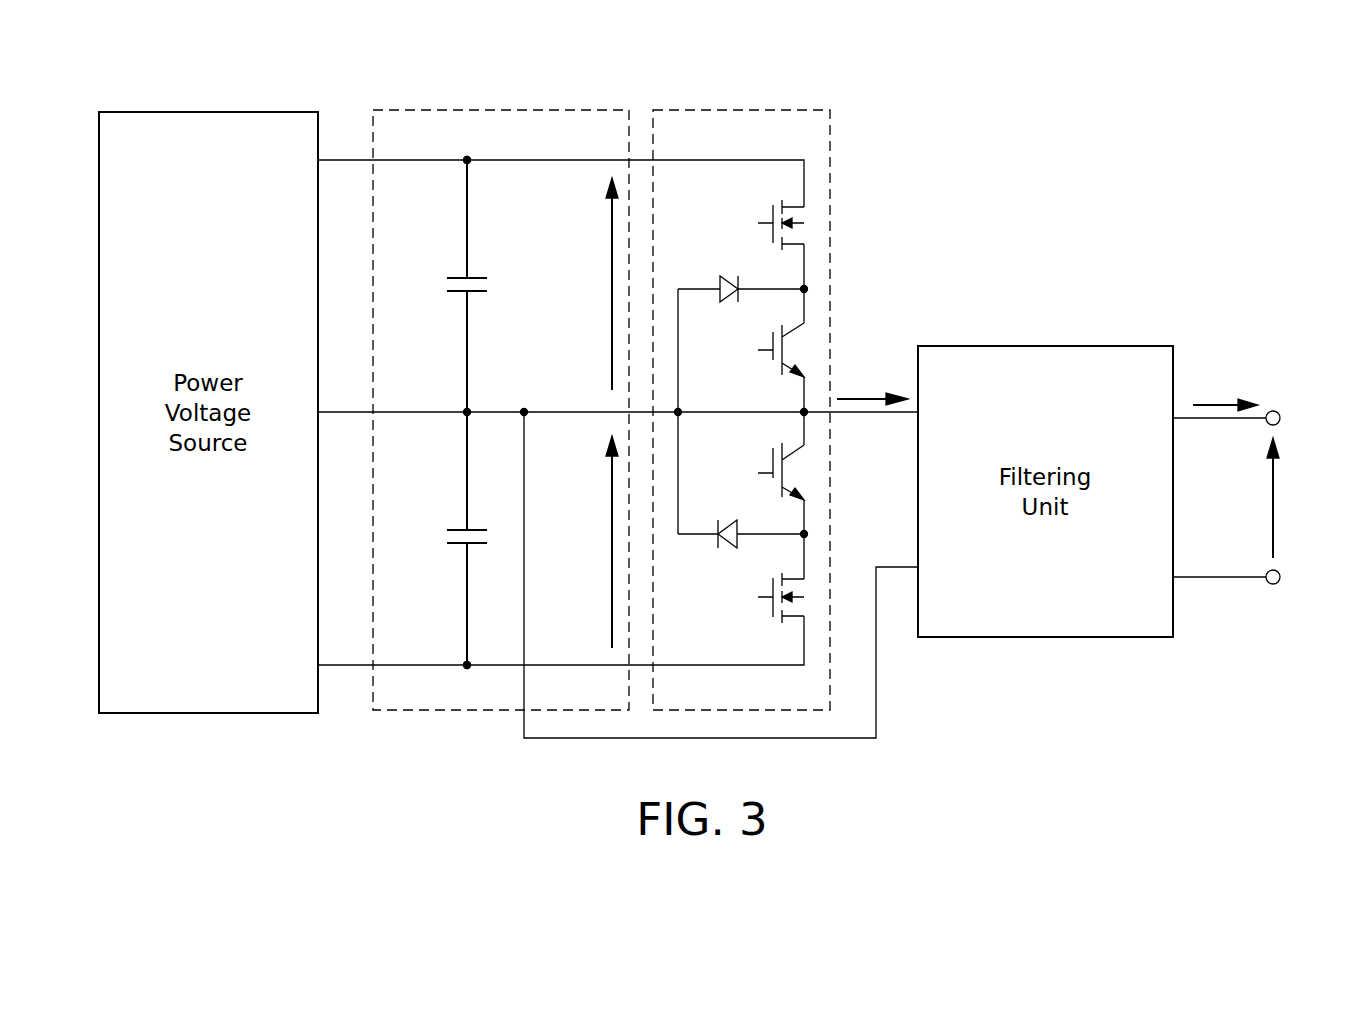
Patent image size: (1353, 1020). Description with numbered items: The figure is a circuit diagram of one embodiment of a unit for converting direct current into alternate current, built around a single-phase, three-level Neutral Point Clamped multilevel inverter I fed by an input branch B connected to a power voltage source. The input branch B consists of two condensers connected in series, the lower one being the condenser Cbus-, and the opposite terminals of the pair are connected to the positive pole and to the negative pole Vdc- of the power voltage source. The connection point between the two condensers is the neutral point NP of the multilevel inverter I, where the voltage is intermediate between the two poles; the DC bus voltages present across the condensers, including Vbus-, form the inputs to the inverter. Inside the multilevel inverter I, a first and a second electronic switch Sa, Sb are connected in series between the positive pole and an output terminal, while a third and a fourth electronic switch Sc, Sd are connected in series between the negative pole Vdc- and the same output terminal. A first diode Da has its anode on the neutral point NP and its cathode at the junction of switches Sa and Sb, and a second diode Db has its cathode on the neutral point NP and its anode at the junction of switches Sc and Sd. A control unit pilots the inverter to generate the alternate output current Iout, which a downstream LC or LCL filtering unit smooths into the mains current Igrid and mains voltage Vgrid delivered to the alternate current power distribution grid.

The input branch B is at (442, 110).
The multilevel inverter I is at (830, 128).
The condenser Cbus- is at (434, 538).
The DC bus voltage Vbus- is at (579, 542).
The negative pole Vdc- is at (474, 684).
The neutral point NP is at (523, 396).
The first electronic switch Sa is at (770, 219).
The second electronic switch Sb is at (770, 346).
The third electronic switch Sc is at (770, 469).
The fourth electronic switch Sd is at (770, 593).
The first diode Da is at (741, 390).
The second diode Db is at (741, 519).
The alternate output current Iout is at (872, 380).
The mains current Igrid is at (1225, 386).
The mains voltage Vgrid is at (1301, 498).